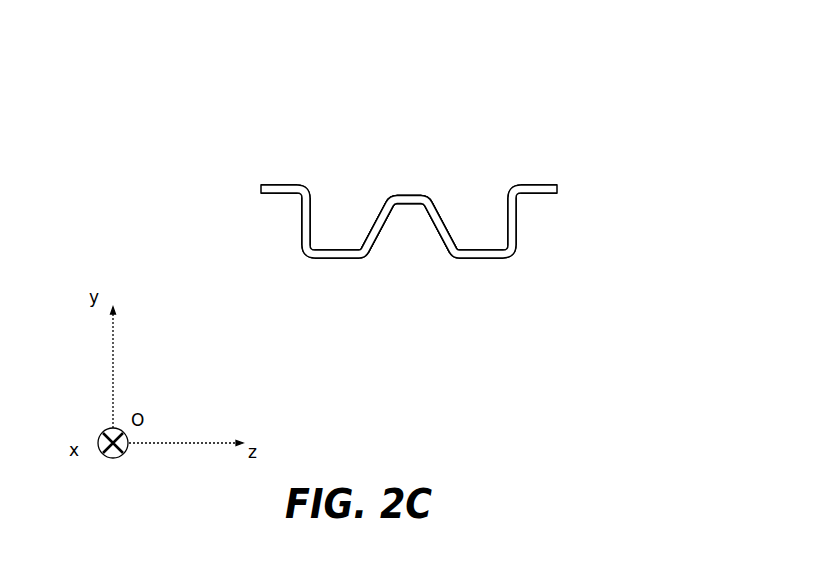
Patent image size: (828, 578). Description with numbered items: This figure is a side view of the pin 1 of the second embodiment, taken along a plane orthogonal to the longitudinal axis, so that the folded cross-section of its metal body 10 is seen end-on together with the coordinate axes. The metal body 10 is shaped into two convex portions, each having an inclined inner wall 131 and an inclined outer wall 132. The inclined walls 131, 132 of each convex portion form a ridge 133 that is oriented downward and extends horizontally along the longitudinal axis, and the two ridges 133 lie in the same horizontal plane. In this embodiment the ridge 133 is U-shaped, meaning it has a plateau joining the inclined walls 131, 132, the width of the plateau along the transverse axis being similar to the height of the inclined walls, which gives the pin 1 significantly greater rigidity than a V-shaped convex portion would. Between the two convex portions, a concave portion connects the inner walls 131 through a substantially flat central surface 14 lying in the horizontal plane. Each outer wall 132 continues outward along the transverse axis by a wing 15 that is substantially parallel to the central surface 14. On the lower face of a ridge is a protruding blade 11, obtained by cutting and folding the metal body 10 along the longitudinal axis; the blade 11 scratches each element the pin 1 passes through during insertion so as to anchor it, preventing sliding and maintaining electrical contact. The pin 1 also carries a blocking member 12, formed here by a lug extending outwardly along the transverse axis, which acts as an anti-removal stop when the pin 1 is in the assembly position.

The pin 1 is at (243, 110).
The metal body 10 is at (261, 192).
The blade 11 is at (452, 267).
The blocking member 12 is at (552, 206).
The central surface 14 is at (411, 213).
The wing 15 is at (540, 206).
The inclined inner wall 131 is at (444, 209).
The inclined outer wall 132 is at (500, 221).
The ridge 133 is at (473, 237).